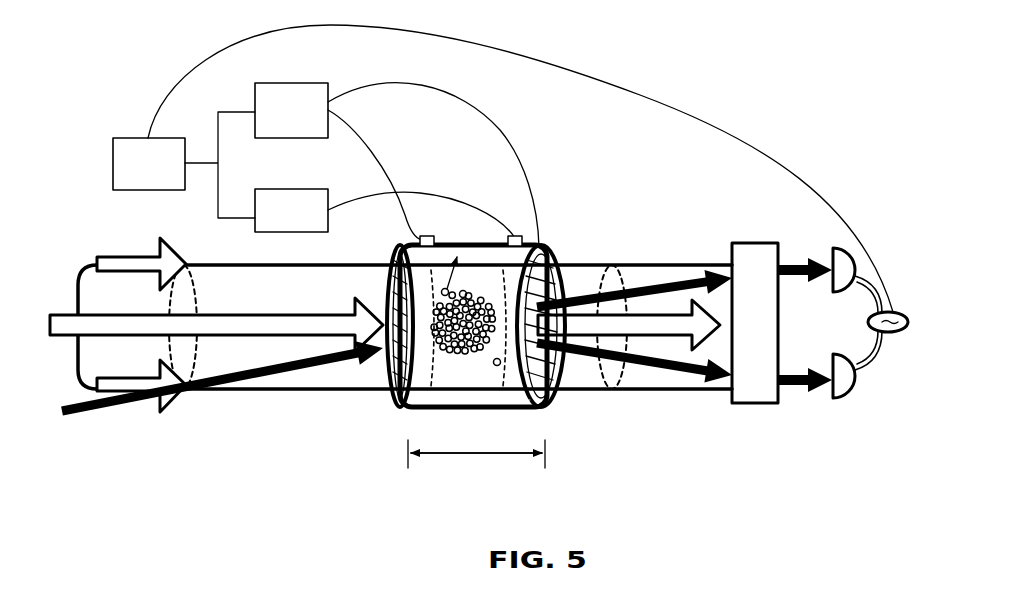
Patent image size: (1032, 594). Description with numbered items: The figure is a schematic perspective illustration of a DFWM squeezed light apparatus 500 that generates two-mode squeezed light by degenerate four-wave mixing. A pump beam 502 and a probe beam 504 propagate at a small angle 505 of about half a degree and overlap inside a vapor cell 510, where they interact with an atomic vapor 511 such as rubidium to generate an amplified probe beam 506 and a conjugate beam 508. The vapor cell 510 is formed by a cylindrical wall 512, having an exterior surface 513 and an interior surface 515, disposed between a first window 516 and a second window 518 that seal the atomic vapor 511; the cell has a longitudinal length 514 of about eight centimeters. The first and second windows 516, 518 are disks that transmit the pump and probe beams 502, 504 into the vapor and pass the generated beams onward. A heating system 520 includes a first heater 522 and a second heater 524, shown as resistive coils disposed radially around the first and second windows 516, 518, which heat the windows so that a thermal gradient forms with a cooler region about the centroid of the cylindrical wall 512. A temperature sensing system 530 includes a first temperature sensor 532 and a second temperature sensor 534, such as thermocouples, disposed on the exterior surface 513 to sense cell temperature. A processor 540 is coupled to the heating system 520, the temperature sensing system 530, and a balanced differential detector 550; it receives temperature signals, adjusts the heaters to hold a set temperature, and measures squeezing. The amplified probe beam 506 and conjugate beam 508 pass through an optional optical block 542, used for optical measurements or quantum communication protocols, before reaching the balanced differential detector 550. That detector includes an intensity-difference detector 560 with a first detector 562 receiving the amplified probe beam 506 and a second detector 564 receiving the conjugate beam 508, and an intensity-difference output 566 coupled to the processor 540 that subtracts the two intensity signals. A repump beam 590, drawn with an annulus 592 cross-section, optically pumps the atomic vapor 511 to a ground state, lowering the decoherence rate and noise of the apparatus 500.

The DFWM squeezed light apparatus 500 is at (838, 43).
The pump beam 502 is at (276, 310).
The probe beam 504 is at (86, 416).
The small angle 505 is at (287, 352).
The amplified probe beam 506 is at (680, 281).
The conjugate beam 508 is at (674, 380).
The vapor cell 510 is at (477, 241).
The atomic vapor 511 is at (462, 361).
The cylindrical wall 512 is at (477, 286).
The exterior surface 513 is at (447, 241).
The longitudinal length 514 is at (476, 461).
The interior surface 515 is at (495, 397).
The first window 516 is at (392, 396).
The second window 518 is at (541, 367).
The heating system 520 is at (290, 83).
The first heater 522 is at (388, 372).
The second heater 524 is at (546, 411).
The temperature sensing system 530 is at (295, 189).
The first temperature sensor 532 is at (420, 242).
The second temperature sensor 534 is at (518, 237).
The processor 540 is at (130, 138).
The optical block 542 is at (756, 405).
The balanced differential detector 550 is at (884, 299).
The intensity-difference detector 560 is at (904, 358).
The first detector 562 is at (840, 250).
The second detector 564 is at (852, 399).
The intensity-difference output 566 is at (898, 314).
The repump beam 590 is at (90, 250).
The annulus 592 is at (169, 298).